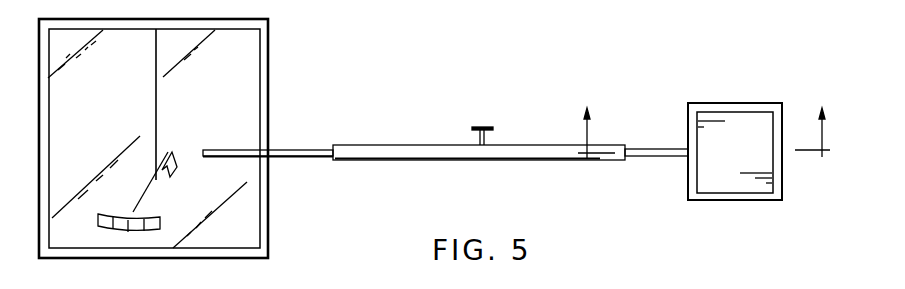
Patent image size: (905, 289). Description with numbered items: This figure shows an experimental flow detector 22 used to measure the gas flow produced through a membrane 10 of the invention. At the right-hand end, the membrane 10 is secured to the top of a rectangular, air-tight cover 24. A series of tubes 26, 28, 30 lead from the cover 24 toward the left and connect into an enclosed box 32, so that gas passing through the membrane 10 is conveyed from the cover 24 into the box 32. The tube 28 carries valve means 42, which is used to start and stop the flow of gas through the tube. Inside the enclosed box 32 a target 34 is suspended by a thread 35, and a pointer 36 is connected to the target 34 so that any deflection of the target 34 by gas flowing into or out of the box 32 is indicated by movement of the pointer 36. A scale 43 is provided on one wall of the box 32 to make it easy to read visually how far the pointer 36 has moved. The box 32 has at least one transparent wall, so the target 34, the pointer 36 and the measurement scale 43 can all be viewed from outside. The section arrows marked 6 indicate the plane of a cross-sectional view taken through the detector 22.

The enclosed box 32 is at (270, 46).
The thread 35 is at (155, 112).
The target 34 is at (179, 172).
The pointer 36 is at (142, 197).
The scale 43 is at (127, 230).
The tube 30 is at (291, 148).
The tube 28 is at (406, 161).
The valve means 42 is at (487, 128).
The flow detector 22 is at (497, 70).
The section line 6- 6 is at (705, 120).
The tube 26 is at (657, 158).
The rectangular cover 24 is at (725, 102).
The membrane 10 is at (724, 190).